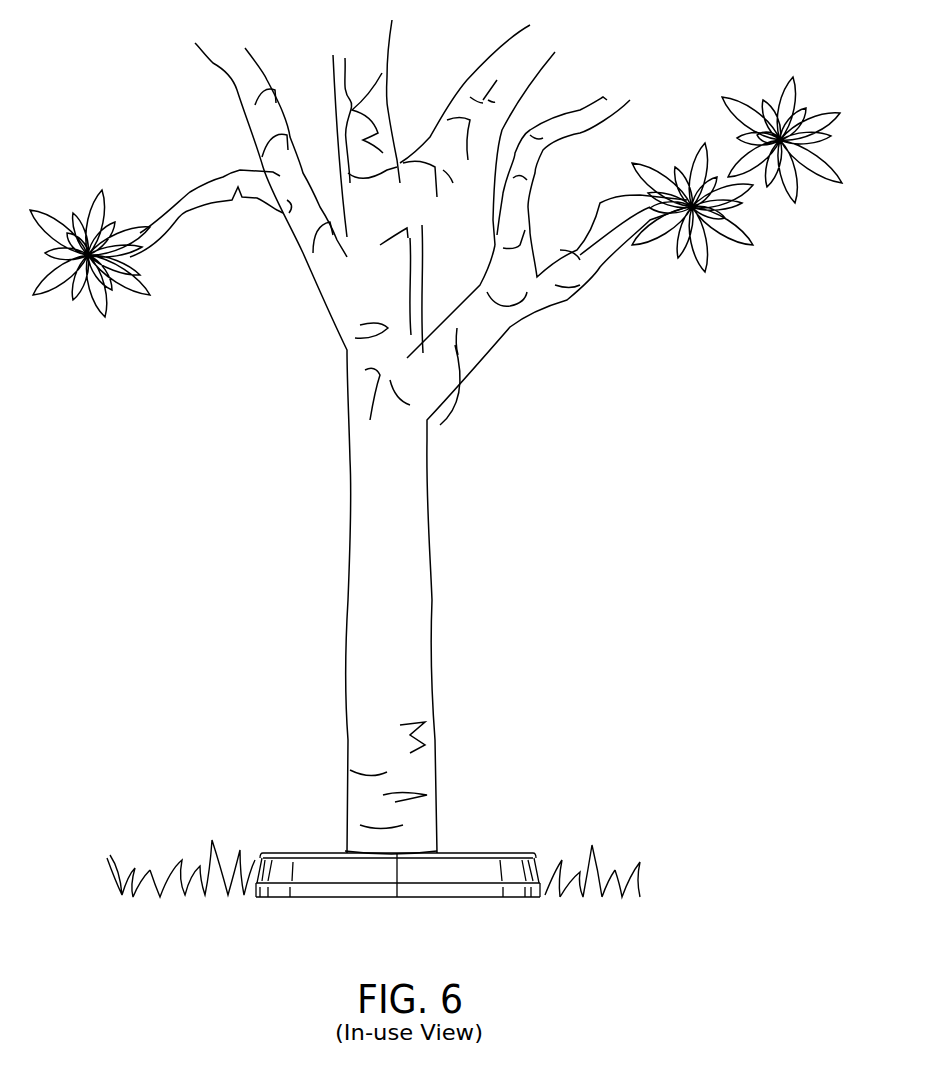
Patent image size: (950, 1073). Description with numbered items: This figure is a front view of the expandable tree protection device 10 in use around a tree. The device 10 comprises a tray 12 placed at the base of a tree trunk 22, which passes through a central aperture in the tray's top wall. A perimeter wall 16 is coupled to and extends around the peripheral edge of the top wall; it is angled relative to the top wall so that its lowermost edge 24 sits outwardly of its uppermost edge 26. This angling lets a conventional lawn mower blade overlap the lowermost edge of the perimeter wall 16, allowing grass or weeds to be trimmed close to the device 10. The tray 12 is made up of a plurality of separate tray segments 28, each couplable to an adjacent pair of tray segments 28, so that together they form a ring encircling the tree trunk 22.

The expandable tree protection device 10 is at (452, 864).
The tray 12 is at (486, 848).
The perimeter wall 16 is at (353, 878).
The tree trunk 22 is at (430, 780).
The lowermost edge 24 is at (537, 893).
The uppermost edge 26 is at (536, 855).
The tray segments 28 is at (317, 873).